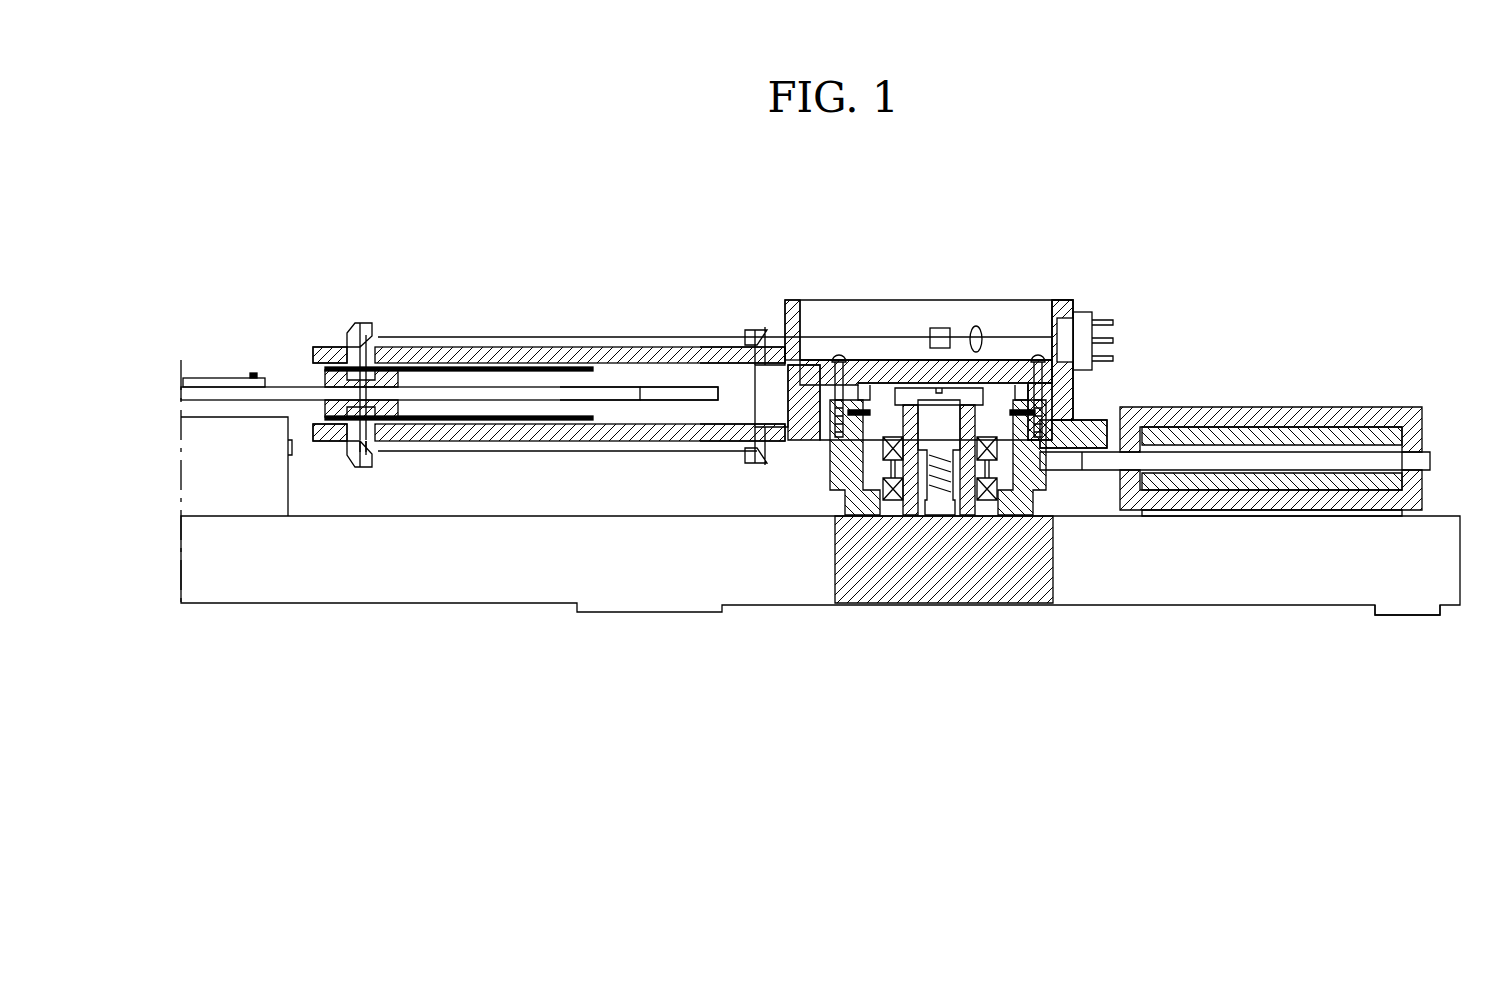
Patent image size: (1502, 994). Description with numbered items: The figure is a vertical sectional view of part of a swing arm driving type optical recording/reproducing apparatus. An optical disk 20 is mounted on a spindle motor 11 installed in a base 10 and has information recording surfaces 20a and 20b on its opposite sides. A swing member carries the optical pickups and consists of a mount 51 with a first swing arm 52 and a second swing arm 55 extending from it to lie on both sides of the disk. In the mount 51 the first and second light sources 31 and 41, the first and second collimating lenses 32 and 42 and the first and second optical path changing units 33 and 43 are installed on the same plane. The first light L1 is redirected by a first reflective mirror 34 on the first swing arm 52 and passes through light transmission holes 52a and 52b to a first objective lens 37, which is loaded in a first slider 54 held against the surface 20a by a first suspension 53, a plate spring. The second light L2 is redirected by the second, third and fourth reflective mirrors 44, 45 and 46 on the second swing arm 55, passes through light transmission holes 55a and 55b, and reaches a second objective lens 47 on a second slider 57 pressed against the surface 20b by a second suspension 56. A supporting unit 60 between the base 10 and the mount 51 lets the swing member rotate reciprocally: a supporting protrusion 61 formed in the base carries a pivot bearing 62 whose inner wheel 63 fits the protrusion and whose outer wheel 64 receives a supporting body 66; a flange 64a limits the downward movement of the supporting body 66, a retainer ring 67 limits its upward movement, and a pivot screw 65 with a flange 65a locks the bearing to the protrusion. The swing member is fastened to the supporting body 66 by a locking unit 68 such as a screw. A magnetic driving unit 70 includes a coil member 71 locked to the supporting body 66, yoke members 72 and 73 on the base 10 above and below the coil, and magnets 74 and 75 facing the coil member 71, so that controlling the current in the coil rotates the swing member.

The base 10 is at (1418, 600).
The spindle motor 11 is at (238, 495).
The optical disk 20 is at (449, 374).
The information recording surface 20a is at (650, 387).
The information recording surface 20b is at (640, 402).
The first light source 31 is at (1080, 312).
The second light source 41 is at (1092, 298).
The first collimating lens 32 is at (976, 326).
The second collimating lens 42 is at (990, 269).
The first optical path changing unit 33 is at (938, 328).
The second optical path changing unit 43 is at (932, 295).
The first reflective mirror 34 is at (358, 323).
The first objective lens 37 is at (368, 372).
The second reflective mirror 44 is at (755, 328).
The third reflective mirror 45 is at (764, 465).
The fourth reflective mirror 46 is at (355, 468).
The second objective lens 47 is at (372, 450).
The mount 51 is at (1085, 388).
The first swing arm 52 is at (537, 322).
The light transmission hole 52a is at (738, 355).
The light transmission hole 52b is at (348, 362).
The first suspension 53 is at (485, 347).
The first slider 54 is at (330, 375).
The second swing arm 55 is at (537, 464).
The light transmission hole 55a is at (742, 443).
The light transmission hole 55b is at (345, 442).
The second suspension 56 is at (483, 441).
The second slider 57 is at (335, 410).
The supporting unit 60 is at (922, 486).
The supporting protrusion 61 is at (940, 515).
The pivot bearing 62 is at (855, 480).
The inner wheel 63 is at (912, 515).
The outer wheel 64 is at (1030, 520).
The flange 64a is at (992, 500).
The pivot screw 65 is at (948, 425).
The flange 65a is at (870, 390).
The supporting body 66 is at (835, 560).
The retainer ring 67 is at (1005, 505).
The locking unit 68 is at (837, 355).
The magnetic driving unit 70 is at (1265, 503).
The coil member 71 is at (1420, 462).
The yoke member 72 is at (1316, 407).
The yoke member 73 is at (1345, 480).
The magnet 74 is at (1362, 430).
The magnet 75 is at (1290, 497).
The first light L1 is at (605, 337).
The second light L2 is at (603, 452).